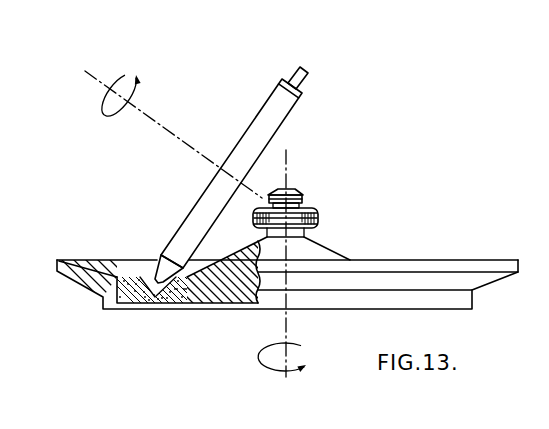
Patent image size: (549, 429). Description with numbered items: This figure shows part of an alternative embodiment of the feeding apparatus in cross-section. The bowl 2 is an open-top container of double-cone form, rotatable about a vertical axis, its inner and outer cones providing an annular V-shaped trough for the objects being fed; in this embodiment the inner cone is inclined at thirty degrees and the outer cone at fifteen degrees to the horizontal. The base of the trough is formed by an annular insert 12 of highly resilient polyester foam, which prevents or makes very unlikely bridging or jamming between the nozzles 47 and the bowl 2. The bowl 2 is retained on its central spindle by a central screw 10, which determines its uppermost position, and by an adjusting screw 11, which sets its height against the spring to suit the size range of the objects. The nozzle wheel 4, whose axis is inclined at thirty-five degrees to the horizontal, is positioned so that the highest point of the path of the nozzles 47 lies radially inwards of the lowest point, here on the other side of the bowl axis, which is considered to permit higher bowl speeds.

The bowl 2 is at (64, 275).
The nozzle wheel 4 is at (283, 112).
The central screw 10 is at (292, 189).
The adjusting screw 11 is at (320, 220).
The annular insert 12 is at (118, 303).
The nozzles 47 is at (298, 72).